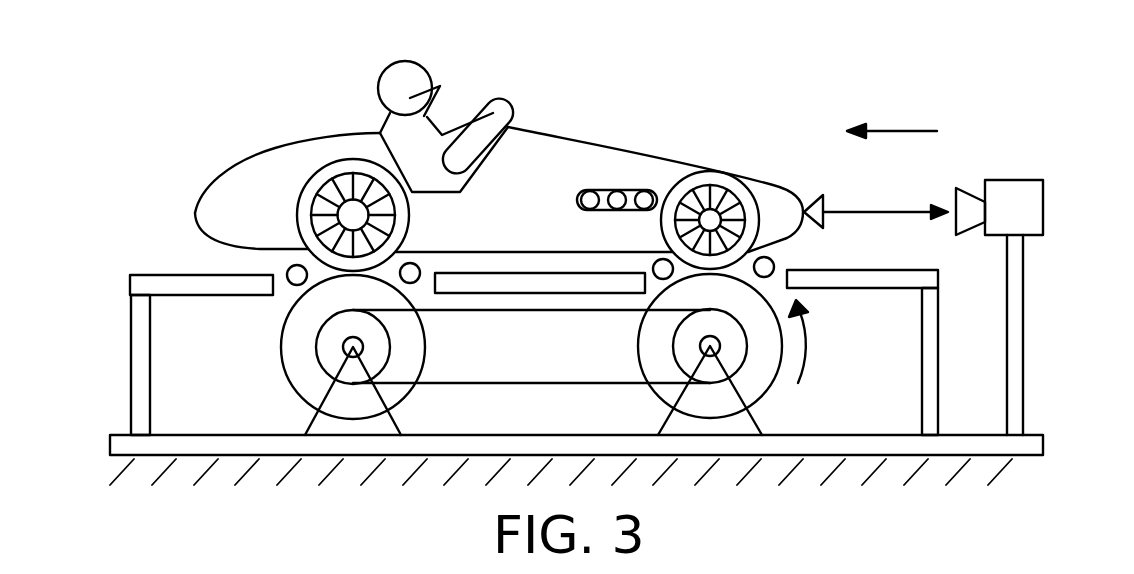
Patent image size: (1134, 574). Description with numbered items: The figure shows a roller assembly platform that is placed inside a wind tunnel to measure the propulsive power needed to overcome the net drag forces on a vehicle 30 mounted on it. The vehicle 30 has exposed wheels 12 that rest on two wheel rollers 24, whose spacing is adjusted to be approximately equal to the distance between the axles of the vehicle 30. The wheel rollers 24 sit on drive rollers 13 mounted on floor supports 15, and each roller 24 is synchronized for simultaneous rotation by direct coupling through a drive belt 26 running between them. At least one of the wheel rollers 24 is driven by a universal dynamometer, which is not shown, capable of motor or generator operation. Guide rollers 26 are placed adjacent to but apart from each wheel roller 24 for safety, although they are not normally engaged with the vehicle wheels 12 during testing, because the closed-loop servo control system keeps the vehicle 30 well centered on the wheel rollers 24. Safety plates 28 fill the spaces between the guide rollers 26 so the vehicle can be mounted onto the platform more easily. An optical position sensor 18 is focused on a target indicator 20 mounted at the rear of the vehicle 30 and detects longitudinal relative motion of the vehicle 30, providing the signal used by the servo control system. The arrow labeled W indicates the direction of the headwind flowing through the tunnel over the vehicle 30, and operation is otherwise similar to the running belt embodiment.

The exposed wheels 12 is at (313, 180).
The drive rollers 13 is at (333, 360).
The floor supports 15 is at (337, 423).
The optical position sensor 18 is at (1017, 187).
The target indicator 20 is at (816, 198).
The wheel rollers 24 is at (302, 347).
The guide rollers 26 is at (285, 272).
The safety plates 28 is at (197, 278).
The vehicle 30 is at (556, 163).
The wind direction W is at (911, 133).